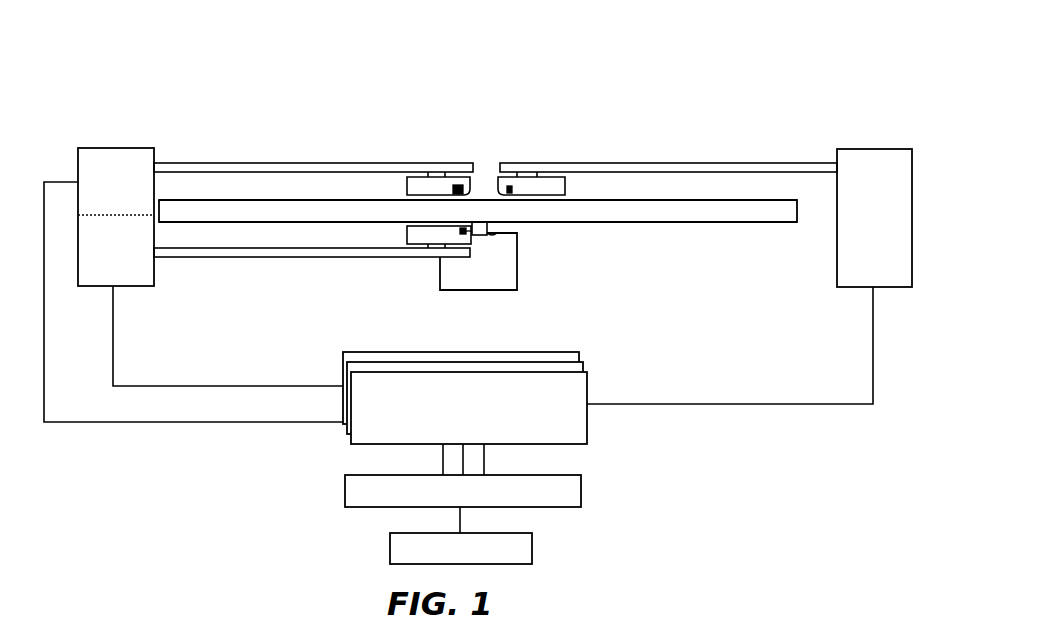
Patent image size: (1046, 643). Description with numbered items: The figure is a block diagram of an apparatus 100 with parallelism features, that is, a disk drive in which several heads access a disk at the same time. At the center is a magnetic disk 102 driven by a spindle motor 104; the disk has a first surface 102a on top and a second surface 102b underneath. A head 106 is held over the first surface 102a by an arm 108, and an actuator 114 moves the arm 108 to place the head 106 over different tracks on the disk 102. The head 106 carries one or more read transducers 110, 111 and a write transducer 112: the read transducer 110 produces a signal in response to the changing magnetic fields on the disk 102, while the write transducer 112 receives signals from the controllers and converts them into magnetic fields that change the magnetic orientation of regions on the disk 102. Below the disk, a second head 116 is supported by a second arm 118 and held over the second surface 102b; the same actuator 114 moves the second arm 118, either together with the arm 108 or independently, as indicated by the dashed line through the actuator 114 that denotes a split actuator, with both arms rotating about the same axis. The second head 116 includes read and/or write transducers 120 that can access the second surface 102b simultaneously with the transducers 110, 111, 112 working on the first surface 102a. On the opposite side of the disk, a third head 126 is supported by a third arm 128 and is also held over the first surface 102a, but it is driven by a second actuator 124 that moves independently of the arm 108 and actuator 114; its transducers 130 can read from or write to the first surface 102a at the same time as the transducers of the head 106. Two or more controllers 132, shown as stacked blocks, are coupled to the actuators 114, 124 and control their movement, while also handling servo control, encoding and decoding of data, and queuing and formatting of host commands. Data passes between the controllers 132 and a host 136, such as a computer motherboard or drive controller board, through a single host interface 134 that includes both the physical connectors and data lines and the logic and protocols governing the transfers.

The apparatus 100 is at (622, 92).
The magnetic disk 102 is at (755, 214).
The first surface of the disk 102a is at (650, 200).
The second surface of the disk 102b is at (676, 222).
The spindle motor 104 is at (455, 290).
The head 106 is at (420, 183).
The arm 108 is at (290, 163).
The read transducer 110 is at (466, 180).
The read transducer 111 is at (459, 185).
The write transducer 112 is at (456, 185).
The actuator 114 is at (105, 150).
The second head 116 is at (417, 238).
The second arm 118 is at (275, 257).
The read and/or write transducers 120 is at (490, 233).
The second actuator 124 is at (866, 149).
The third head 126 is at (530, 180).
The third arm 128 is at (680, 163).
The read and/or write transducers 130 is at (512, 190).
The controllers 132 is at (545, 352).
The host interface 134 is at (581, 494).
The host 136 is at (532, 551).